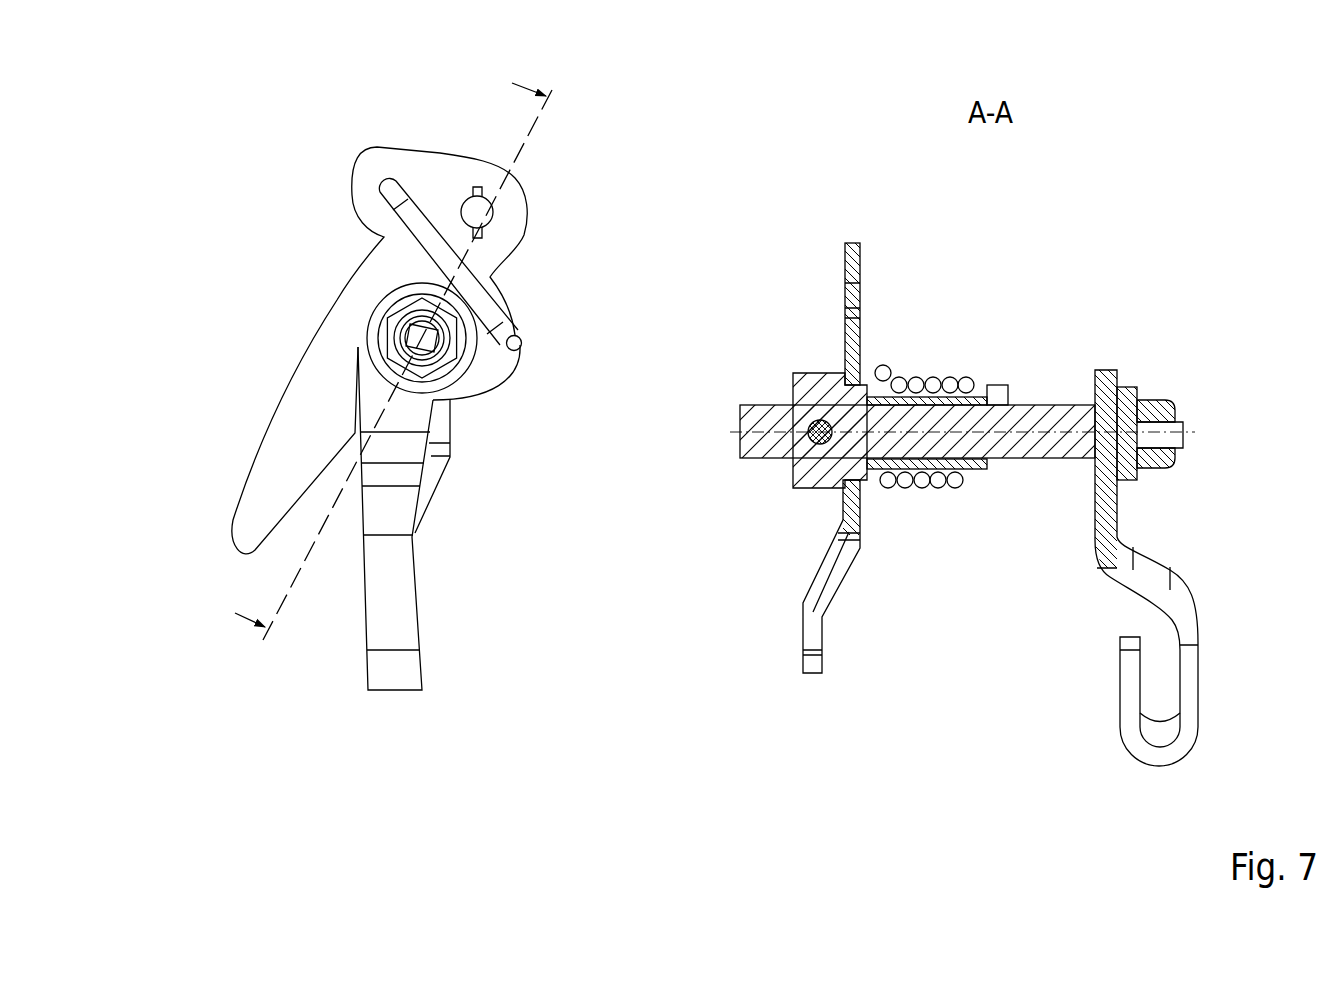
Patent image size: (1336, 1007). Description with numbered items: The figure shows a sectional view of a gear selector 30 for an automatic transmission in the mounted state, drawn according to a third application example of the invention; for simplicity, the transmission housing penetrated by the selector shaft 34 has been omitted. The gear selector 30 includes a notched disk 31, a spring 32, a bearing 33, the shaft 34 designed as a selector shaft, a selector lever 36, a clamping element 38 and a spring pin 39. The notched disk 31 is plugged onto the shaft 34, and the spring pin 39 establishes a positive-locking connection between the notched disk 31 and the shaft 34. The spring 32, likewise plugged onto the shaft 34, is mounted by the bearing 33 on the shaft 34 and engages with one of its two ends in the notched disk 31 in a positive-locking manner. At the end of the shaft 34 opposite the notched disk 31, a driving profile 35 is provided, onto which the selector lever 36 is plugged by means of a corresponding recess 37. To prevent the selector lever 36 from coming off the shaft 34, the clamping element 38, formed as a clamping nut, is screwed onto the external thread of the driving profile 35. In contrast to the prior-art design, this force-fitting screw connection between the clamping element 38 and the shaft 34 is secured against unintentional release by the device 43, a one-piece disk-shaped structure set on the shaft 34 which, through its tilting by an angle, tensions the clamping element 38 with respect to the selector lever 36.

The gear selector 30 is at (308, 258).
The notched disk 31 is at (508, 217).
The spring 32 is at (406, 240).
The bearing 33 is at (969, 463).
The shaft 34 is at (1022, 418).
The driving profile 35 is at (385, 337).
The selector lever 36 is at (387, 610).
The recess 37 is at (1085, 425).
The clamping element 38 is at (447, 363).
The spring pin 39 is at (775, 460).
The device 43 is at (490, 281).